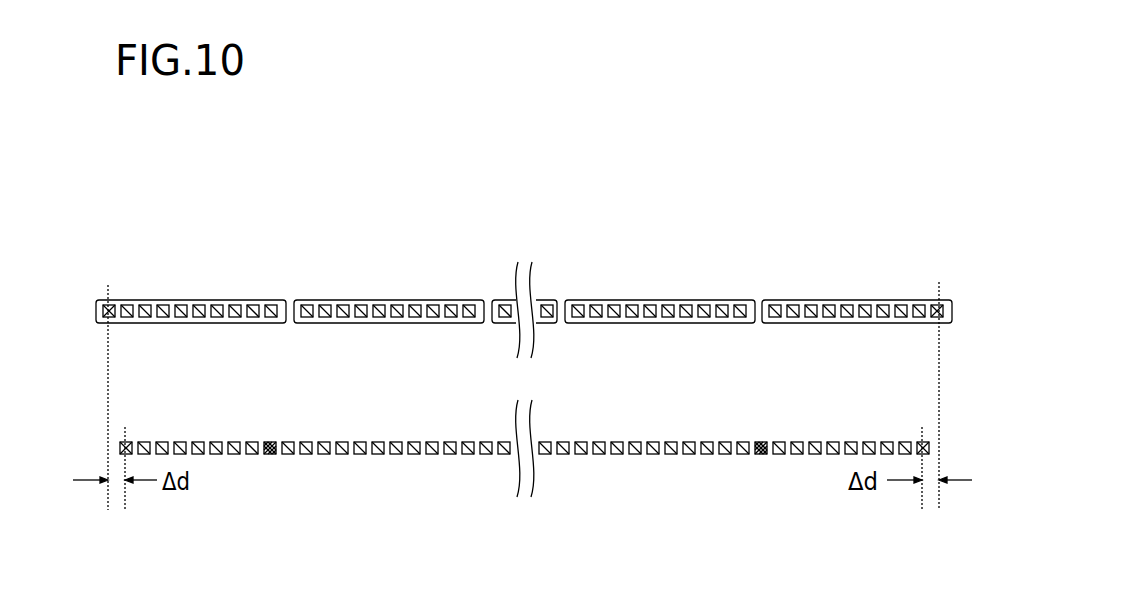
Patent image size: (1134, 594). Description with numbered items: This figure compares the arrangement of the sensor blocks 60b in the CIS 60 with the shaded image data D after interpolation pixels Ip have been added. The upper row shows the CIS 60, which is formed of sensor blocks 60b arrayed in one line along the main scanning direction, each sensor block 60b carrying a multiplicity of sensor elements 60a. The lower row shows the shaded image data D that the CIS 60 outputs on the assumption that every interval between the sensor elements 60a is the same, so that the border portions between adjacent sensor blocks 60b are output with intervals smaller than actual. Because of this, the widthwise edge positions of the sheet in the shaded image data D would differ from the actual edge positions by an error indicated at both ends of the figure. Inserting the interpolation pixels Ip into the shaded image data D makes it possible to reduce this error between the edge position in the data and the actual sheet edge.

The CIS 60 is at (524, 291).
The sensor element 60a is at (132, 324).
The sensor block 60b is at (191, 306).
The shaded image data D is at (524, 442).
The interpolation pixel Ip is at (270, 457).